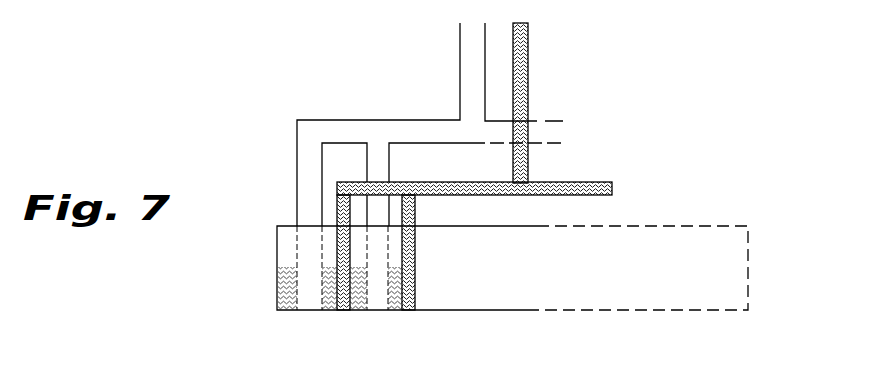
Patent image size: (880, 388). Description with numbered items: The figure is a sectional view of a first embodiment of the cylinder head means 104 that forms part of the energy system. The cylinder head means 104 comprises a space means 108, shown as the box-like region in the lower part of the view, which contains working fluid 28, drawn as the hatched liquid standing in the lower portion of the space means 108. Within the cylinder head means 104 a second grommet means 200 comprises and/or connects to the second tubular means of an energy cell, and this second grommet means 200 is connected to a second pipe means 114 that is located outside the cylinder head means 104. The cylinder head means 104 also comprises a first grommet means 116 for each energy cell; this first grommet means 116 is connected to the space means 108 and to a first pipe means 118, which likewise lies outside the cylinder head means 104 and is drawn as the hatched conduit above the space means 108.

The second pipe means 114 is at (297, 139).
The first pipe means 118 is at (417, 208).
The first grommet means 116 is at (413, 242).
The space means 108 is at (288, 290).
The cylinder head means 104 is at (748, 265).
The working fluid 28 is at (405, 308).
The second grommet means 200 is at (297, 243).